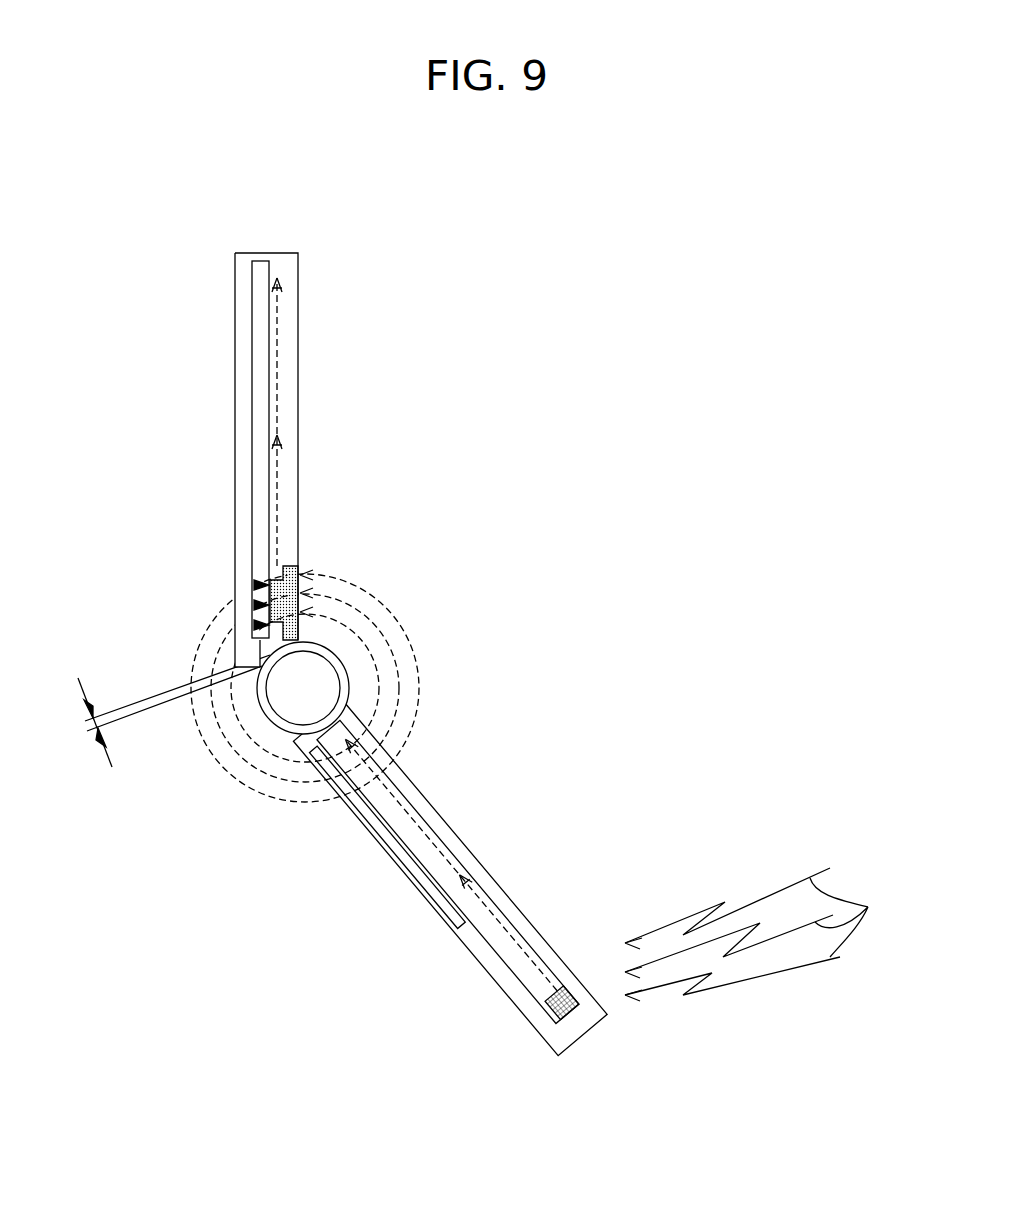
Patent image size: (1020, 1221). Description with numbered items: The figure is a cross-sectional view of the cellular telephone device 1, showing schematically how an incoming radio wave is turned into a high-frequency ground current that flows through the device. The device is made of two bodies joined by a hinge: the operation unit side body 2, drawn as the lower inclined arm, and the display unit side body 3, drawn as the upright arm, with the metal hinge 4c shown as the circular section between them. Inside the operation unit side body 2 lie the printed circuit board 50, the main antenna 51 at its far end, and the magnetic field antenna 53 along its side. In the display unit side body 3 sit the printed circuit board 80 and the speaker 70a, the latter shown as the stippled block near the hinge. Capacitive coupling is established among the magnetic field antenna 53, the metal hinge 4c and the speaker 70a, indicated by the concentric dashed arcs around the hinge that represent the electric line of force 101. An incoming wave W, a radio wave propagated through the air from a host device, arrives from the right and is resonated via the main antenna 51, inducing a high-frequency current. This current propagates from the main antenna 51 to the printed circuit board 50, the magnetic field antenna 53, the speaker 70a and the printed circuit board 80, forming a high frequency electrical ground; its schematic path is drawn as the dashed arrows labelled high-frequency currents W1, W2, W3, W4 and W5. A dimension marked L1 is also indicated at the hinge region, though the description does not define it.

The cellular telephone device 1 is at (456, 240).
The operation unit side body 2 is at (585, 1036).
The display unit side body 3 is at (281, 252).
The metal hinge 4c is at (350, 695).
The printed circuit board 50 is at (498, 958).
The main antenna 51 is at (564, 988).
The magnetic field antenna 53 is at (356, 816).
The speaker 70a is at (292, 565).
The printed circuit board 80 is at (252, 298).
The electric line of force 101 is at (368, 597).
The incoming wave W is at (766, 934).
The high-frequency current W1 is at (486, 895).
The high-frequency current W2 is at (385, 777).
The high-frequency current W3 is at (398, 627).
The high-frequency current W4 is at (277, 472).
The high-frequency current W5 is at (277, 365).
The distance L1 is at (157, 711).